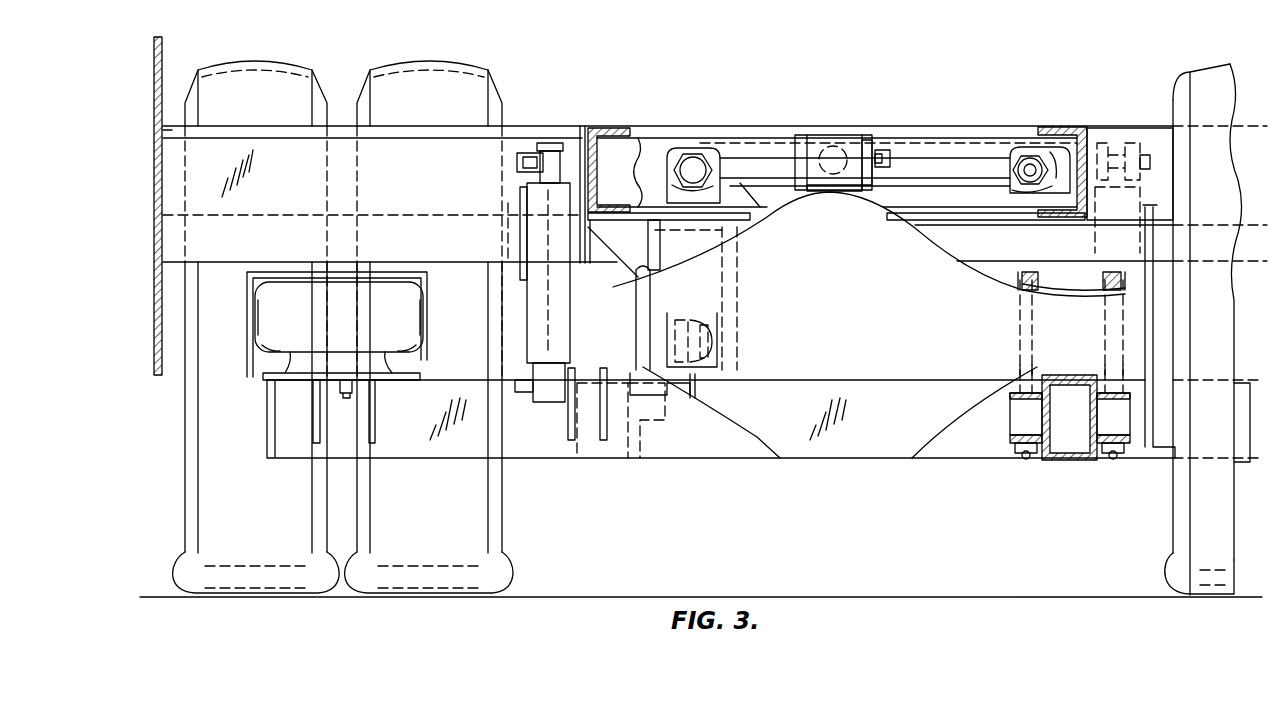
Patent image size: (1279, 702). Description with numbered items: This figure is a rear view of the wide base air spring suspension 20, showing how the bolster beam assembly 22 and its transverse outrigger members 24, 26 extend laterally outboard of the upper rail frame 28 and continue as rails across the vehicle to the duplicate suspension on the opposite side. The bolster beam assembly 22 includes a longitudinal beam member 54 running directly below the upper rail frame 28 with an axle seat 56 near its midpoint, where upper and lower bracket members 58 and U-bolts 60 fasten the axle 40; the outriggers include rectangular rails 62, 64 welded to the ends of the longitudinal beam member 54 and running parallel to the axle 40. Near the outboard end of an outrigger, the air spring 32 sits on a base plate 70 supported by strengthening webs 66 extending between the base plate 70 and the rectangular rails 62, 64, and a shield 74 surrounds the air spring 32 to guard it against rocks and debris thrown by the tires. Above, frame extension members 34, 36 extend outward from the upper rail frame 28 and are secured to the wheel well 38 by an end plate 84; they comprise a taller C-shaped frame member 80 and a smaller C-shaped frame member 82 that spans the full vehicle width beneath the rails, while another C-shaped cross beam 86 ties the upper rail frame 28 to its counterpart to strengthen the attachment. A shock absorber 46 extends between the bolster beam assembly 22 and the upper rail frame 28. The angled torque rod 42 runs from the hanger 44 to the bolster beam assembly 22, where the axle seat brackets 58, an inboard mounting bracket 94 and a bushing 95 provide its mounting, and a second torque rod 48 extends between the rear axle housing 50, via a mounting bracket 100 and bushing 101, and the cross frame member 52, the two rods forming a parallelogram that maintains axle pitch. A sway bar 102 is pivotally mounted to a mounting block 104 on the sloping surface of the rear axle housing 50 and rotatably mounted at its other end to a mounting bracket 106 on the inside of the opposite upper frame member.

The wide base air spring suspension 20 is at (908, 84).
The bolster beam assembly 22 is at (710, 462).
The outrigger member 24 is at (1238, 383).
The outrigger member 26 is at (410, 442).
The upper rail frame 28 is at (612, 128).
The air spring 32 is at (262, 328).
The frame extension member 34 is at (1141, 126).
The frame extension member 36 is at (344, 158).
The wheel well 38 is at (164, 52).
The axle 40 is at (602, 326).
The torque rod 42 is at (730, 300).
The hanger 44 is at (742, 257).
The shock absorber 46 is at (538, 323).
The second torque rod 48 is at (824, 145).
The rear axle housing 50 is at (850, 302).
The cross frame member 52 is at (662, 145).
The longitudinal beam member 54 is at (612, 460).
The axle seat 56 is at (1040, 464).
The bracket members 58 is at (1010, 436).
The U-bolts 60 is at (540, 306).
The rectangular rail 62 is at (948, 460).
The rectangular rail 64 is at (468, 458).
The strengthening webs 66 is at (368, 437).
The base plate 70 is at (292, 378).
The shield 74 is at (263, 376).
The taller C-shaped frame member 80 is at (266, 148).
The smaller C-shaped frame member 82 is at (387, 213).
The end plate 84 is at (164, 174).
The C-shaped cross beam 86 is at (632, 145).
The inboard mounting bracket 94 is at (694, 398).
The bushing 95 is at (722, 346).
The mounting bracket 100 is at (869, 137).
The bushing 101 is at (893, 158).
The sway bar 102 is at (757, 160).
The mounting block 104 is at (712, 150).
The mounting bracket 106 is at (1020, 148).